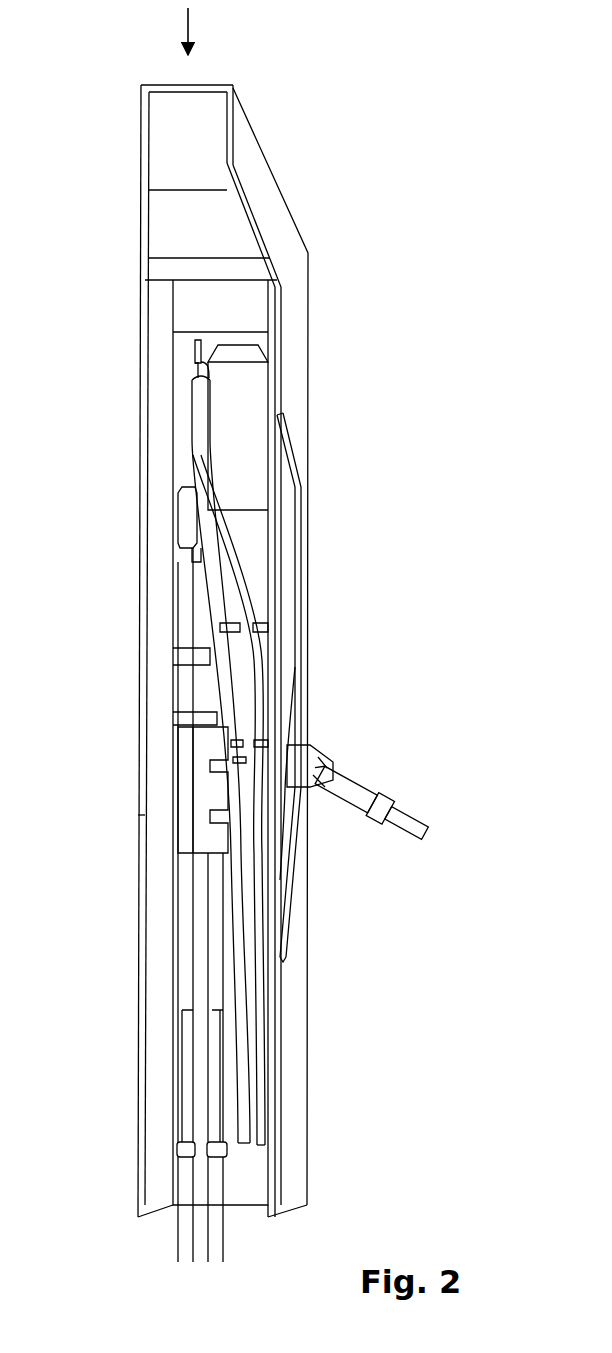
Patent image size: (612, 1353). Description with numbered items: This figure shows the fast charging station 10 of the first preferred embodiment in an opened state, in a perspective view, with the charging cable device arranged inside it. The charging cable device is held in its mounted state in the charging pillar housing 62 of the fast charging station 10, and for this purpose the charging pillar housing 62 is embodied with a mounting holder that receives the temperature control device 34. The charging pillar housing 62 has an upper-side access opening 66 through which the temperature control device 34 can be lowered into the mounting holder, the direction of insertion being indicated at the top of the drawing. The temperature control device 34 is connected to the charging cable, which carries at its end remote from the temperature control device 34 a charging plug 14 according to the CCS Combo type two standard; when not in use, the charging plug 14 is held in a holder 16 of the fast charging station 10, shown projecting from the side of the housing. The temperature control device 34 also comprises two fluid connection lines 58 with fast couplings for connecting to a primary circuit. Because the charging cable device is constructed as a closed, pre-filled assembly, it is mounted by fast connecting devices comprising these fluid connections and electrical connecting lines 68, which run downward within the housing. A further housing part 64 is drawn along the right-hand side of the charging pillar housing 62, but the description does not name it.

The fast charging station 10 is at (332, 165).
The charging plug 14 is at (305, 772).
The holder 16 is at (295, 740).
The temperature control device 34 is at (184, 362).
The fluid connection lines 58 is at (268, 975).
The charging pillar housing 62 is at (112, 431).
The housing cover 64 is at (300, 414).
The upper-side access opening 66 is at (191, 27).
The electrical connecting lines 68 is at (183, 1048).